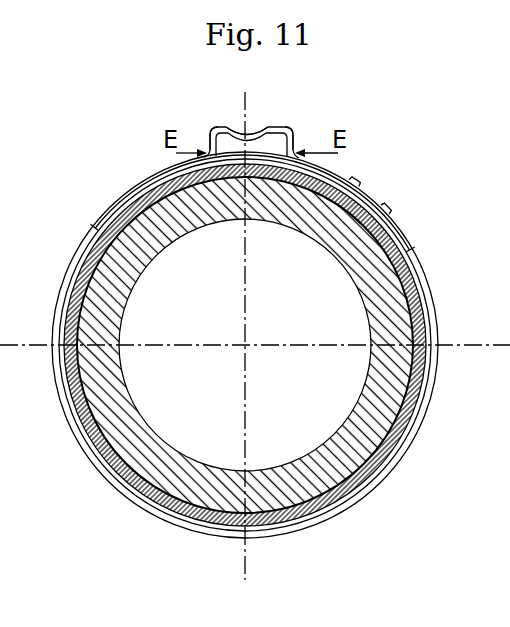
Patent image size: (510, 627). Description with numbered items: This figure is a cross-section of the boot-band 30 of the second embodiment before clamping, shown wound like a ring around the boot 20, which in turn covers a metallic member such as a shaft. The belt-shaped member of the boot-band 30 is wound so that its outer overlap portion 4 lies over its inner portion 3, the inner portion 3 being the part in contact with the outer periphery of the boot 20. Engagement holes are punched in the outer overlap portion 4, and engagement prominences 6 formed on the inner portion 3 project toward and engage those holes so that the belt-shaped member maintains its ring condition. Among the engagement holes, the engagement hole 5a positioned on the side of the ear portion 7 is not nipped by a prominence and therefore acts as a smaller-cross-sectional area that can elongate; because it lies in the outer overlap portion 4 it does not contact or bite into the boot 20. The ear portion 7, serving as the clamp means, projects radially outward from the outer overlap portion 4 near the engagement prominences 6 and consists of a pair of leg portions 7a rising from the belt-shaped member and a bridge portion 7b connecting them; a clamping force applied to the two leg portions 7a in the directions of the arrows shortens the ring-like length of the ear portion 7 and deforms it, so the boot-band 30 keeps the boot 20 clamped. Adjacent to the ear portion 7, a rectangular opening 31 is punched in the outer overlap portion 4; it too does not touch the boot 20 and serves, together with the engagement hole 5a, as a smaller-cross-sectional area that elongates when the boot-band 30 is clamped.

The inner portion 3 is at (292, 186).
The boot 20 is at (421, 289).
The outer overlap portion 4 is at (389, 208).
The engagement hole 5a is at (331, 172).
The engagement prominence 6 is at (358, 180).
The ear portion 7 is at (266, 128).
The leg portion 7a is at (209, 134).
The bridge portion 7b is at (247, 134).
The boot-band 30 is at (106, 200).
The opening 31 is at (80, 250).